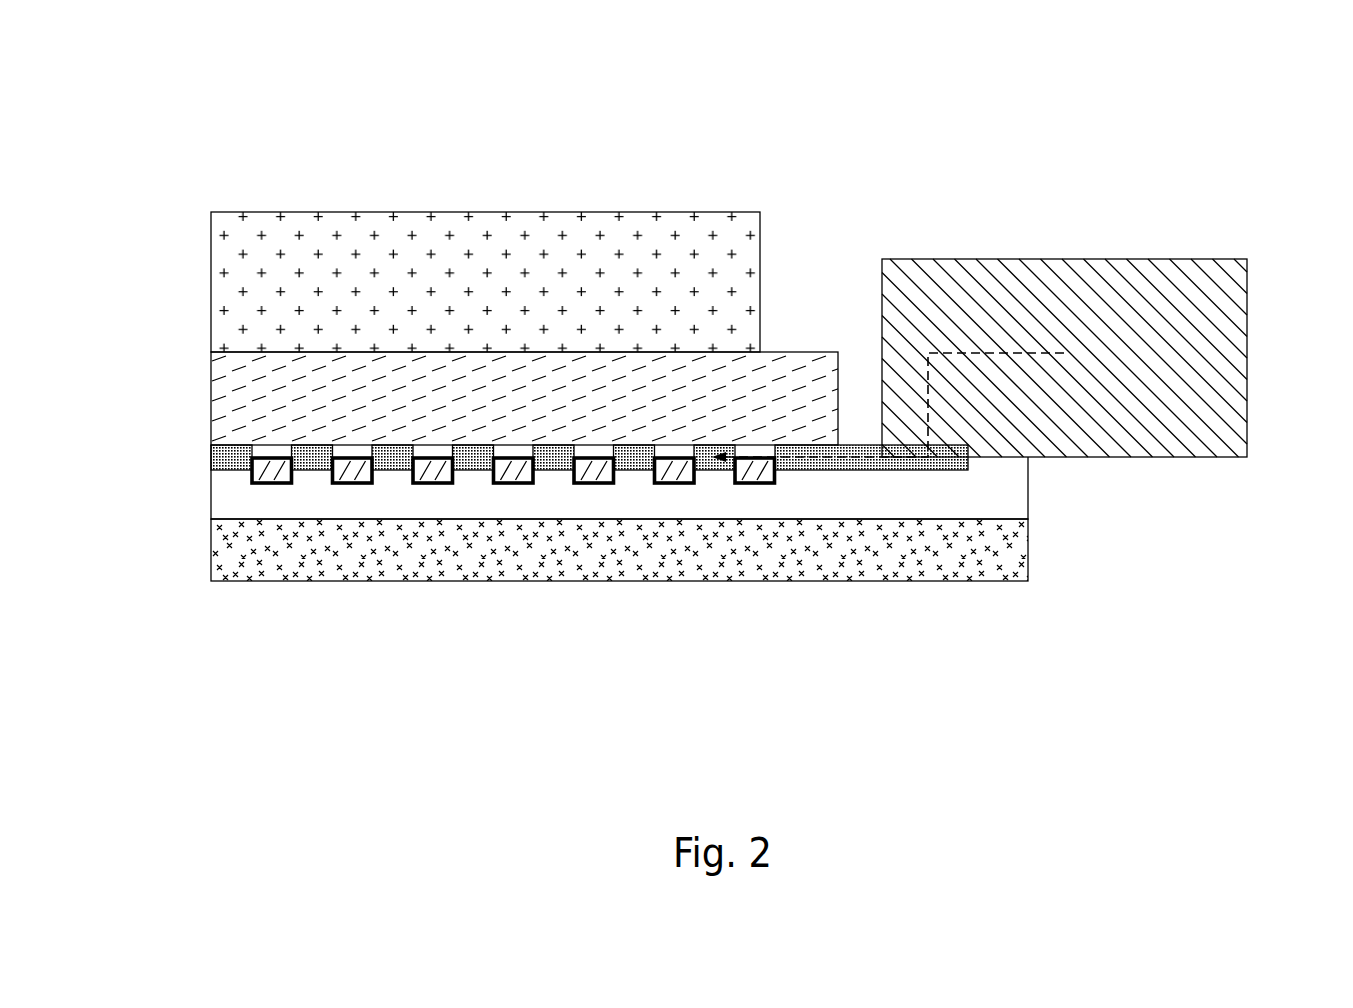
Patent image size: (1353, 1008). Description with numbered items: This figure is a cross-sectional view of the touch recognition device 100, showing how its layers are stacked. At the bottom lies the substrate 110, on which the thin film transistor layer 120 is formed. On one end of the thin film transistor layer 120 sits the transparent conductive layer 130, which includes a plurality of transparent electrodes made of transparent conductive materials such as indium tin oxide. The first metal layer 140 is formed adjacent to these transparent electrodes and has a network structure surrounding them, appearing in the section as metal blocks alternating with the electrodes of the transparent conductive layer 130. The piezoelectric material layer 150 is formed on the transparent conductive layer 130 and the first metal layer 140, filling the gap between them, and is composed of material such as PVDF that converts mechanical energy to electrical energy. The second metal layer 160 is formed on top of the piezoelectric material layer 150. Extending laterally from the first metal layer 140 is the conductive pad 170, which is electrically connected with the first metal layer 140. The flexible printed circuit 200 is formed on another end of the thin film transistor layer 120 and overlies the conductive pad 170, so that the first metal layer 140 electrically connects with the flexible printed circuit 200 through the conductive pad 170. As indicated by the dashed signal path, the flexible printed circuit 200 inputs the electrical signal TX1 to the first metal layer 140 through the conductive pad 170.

The touch recognition device 100 is at (177, 73).
The substrate 110 is at (1022, 542).
The thin film transistor layer 120 is at (1017, 500).
The transparent conductive layer 130 is at (255, 478).
The first metal layer 140 is at (218, 460).
The piezoelectric material layer 150 is at (211, 402).
The second metal layer 160 is at (211, 284).
The conductive pad 170 is at (967, 462).
The flexible printed circuit 200 is at (1235, 355).
The electrical signal TX1 is at (1013, 353).